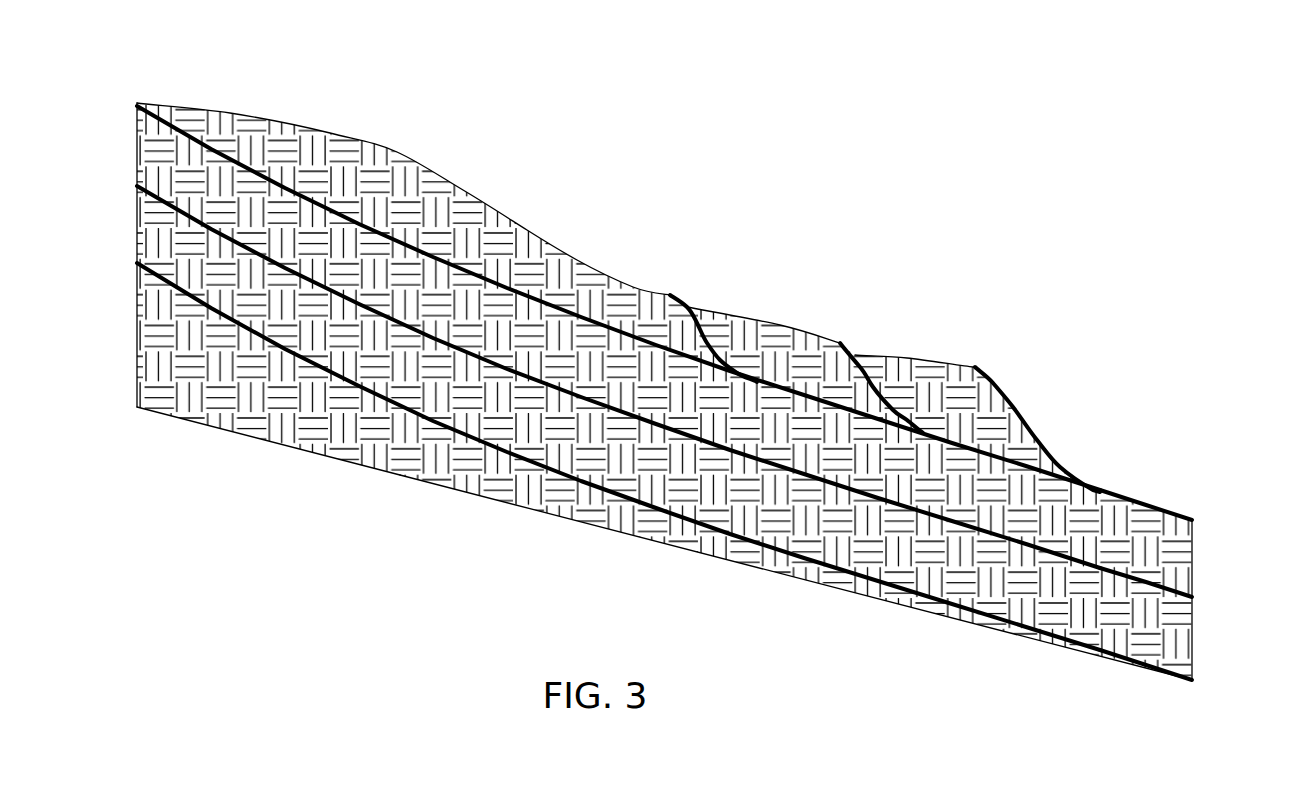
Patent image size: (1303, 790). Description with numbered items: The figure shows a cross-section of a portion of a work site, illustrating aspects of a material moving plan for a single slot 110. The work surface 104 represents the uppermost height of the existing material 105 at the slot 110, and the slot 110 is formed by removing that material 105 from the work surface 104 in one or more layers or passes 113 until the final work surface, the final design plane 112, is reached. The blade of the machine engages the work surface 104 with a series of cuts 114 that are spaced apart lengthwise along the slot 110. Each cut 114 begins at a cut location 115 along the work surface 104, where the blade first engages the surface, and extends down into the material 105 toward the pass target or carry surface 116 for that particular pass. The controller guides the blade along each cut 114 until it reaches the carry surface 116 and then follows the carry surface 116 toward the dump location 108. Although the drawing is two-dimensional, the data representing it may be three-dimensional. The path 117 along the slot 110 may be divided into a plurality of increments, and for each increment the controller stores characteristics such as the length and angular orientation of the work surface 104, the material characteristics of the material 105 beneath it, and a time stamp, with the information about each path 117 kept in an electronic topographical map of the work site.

The work surface 104 is at (397, 152).
The material 105 is at (273, 155).
The dump location 108 is at (1232, 509).
The slot 110 is at (1094, 377).
The final design plane 112 is at (243, 432).
The passes 113 is at (142, 265).
The cuts 114 is at (697, 323).
The cut location 115 is at (670, 293).
The carry surface 116 is at (1157, 667).
The path 117 is at (605, 136).